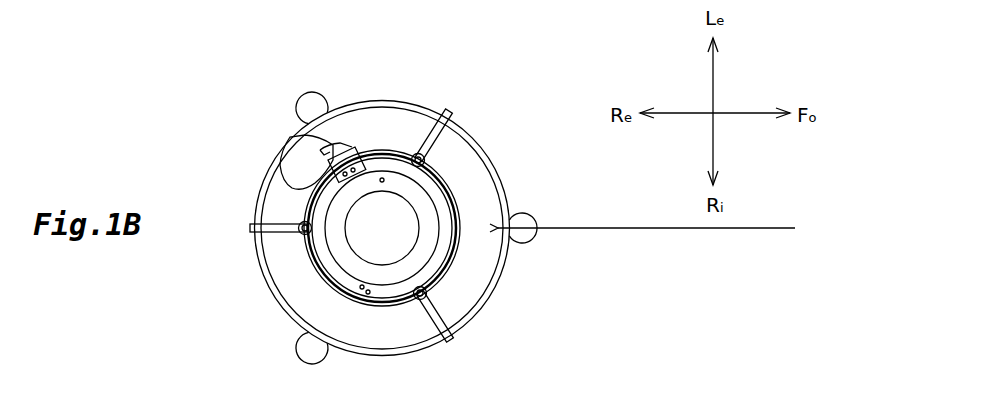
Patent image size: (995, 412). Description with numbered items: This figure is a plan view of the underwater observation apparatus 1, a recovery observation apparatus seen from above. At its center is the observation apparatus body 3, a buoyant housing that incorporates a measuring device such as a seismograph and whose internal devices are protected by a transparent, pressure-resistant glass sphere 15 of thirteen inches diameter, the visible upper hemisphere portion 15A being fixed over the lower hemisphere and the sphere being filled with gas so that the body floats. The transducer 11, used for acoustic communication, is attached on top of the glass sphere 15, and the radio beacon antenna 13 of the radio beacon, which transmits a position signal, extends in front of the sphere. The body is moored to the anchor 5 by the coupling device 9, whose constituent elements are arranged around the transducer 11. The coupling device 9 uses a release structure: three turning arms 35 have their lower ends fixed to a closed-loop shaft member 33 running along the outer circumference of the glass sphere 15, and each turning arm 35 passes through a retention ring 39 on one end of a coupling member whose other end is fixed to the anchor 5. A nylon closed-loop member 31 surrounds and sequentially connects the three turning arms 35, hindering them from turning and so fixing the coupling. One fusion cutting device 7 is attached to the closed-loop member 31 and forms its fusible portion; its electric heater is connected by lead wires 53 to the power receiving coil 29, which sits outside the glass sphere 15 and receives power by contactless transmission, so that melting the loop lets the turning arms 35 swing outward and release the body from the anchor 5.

The underwater observation apparatus 1 is at (510, 86).
The observation apparatus body 3 is at (460, 128).
The anchor 5 is at (506, 258).
The fusion cutting device 7 is at (355, 148).
The coupling device 9 is at (441, 285).
The transducer 11 is at (403, 243).
The radio beacon antenna 13 is at (625, 230).
The glass sphere 15 is at (478, 145).
The upper hemisphere portion 15A is at (480, 178).
The power receiving coil 29 is at (287, 165).
The closed-loop member 31 is at (397, 150).
The closed-loop shaft member 33 is at (362, 295).
The turning arms 35 is at (427, 159).
The retention ring 39 is at (422, 156).
The lead wires 53 is at (320, 150).